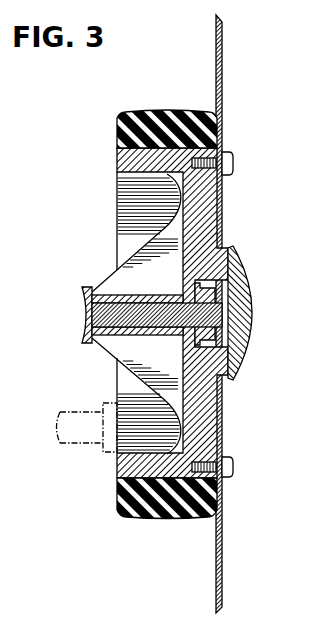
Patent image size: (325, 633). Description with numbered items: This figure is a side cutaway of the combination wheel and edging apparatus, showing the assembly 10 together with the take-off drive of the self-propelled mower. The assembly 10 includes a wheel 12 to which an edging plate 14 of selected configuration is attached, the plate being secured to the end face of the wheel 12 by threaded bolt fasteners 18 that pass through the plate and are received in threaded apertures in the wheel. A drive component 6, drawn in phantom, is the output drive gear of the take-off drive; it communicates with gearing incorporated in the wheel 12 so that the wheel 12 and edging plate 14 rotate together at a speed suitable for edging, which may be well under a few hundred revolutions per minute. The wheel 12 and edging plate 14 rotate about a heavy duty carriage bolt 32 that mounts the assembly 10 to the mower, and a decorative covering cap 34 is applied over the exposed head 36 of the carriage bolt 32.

The drive component 6 is at (95, 448).
The assembly 10 is at (84, 120).
The wheel 12 is at (152, 111).
The edging plate 14 is at (223, 60).
The threaded bolt fasteners 18 is at (233, 470).
The carriage bolt 32 is at (82, 310).
The decorative covering cap 34 is at (252, 312).
The head 36 is at (222, 292).